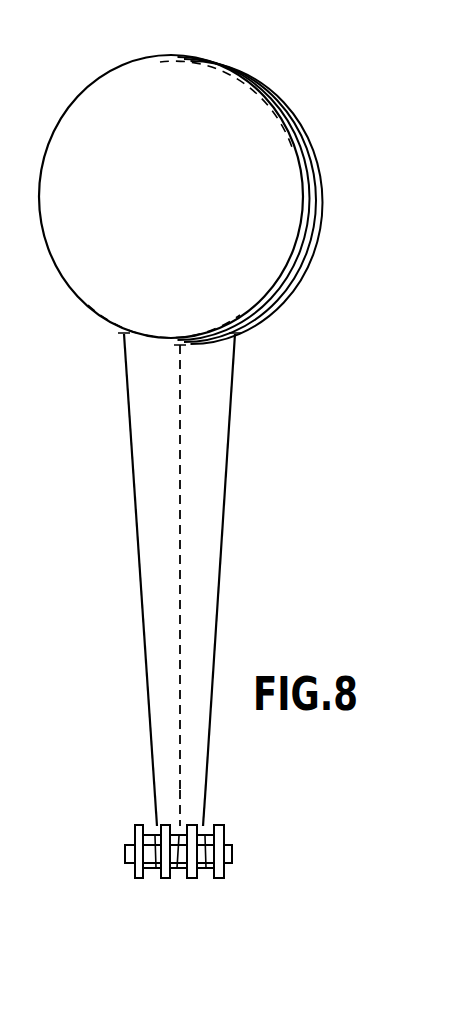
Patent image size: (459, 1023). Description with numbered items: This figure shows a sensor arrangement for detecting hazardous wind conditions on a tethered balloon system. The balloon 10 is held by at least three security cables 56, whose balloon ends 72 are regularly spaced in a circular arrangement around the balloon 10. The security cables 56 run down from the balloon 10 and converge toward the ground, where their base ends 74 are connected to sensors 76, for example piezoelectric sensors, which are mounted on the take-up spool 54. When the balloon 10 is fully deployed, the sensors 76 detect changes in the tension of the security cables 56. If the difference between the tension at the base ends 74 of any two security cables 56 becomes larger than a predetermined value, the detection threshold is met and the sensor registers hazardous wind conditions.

The balloon 10 is at (303, 125).
The balloon ends 72 is at (123, 337).
The security cables 56 is at (180, 552).
The base ends 74 is at (150, 788).
The take-up spool 54 is at (232, 855).
The sensors 76 is at (177, 870).